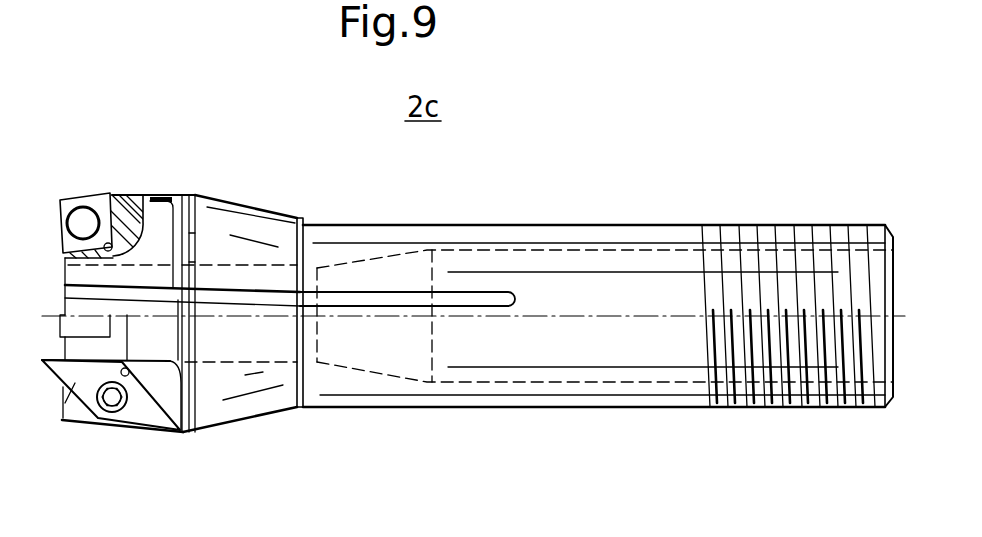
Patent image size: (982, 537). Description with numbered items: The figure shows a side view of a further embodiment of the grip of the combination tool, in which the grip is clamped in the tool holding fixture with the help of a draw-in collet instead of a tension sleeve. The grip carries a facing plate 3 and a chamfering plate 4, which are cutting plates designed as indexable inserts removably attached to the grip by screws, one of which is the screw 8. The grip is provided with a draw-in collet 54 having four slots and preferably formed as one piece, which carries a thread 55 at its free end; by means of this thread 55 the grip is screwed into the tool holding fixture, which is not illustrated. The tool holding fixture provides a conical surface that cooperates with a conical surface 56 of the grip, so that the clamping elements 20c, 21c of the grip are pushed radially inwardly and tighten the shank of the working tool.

The facing plate 3 is at (100, 202).
The chamfering plate 4 is at (63, 420).
The screw 8 is at (113, 412).
The clamping element 20c is at (165, 237).
The clamping element 21c is at (177, 340).
The draw-in collet 54 is at (582, 258).
The thread 55 is at (822, 400).
The conical surface 56 is at (223, 199).